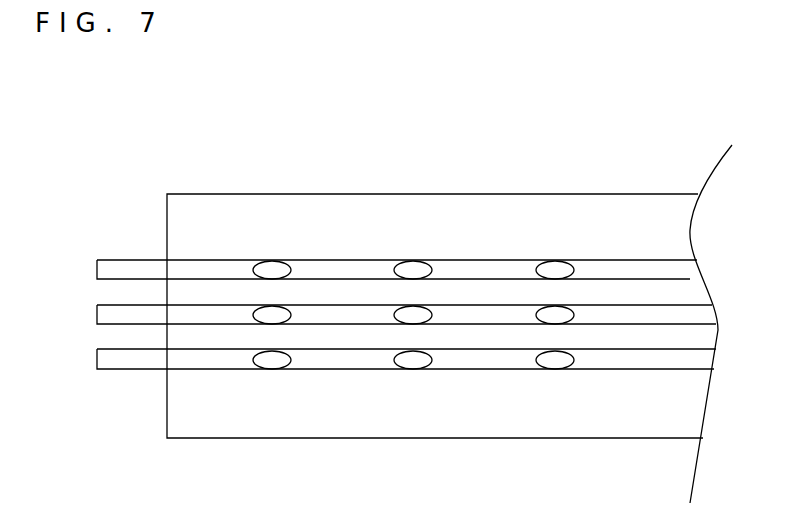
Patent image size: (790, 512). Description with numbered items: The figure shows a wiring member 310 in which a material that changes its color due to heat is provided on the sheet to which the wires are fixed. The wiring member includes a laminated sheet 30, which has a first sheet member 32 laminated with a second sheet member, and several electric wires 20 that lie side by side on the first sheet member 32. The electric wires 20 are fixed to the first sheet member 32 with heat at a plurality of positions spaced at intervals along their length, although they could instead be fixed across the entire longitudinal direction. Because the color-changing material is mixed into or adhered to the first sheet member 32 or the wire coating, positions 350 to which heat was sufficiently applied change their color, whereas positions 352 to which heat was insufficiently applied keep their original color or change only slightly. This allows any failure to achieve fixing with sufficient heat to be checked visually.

The electric wire 20 is at (97, 261).
The laminated sheet 30 is at (270, 194).
The first sheet member 32 is at (338, 200).
The wiring member 310 is at (467, 159).
The positions to which heat is sufficiently applied 350 is at (443, 262).
The positions to which heat is insufficiently applied 352 is at (428, 312).